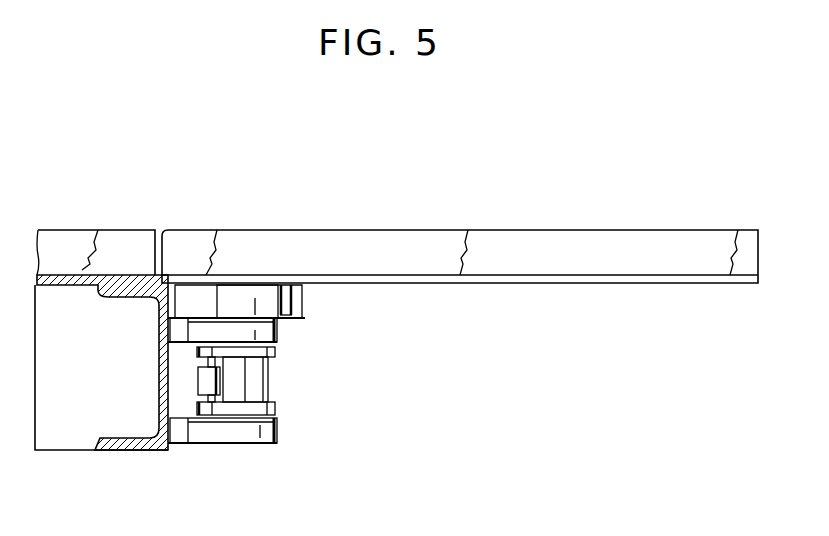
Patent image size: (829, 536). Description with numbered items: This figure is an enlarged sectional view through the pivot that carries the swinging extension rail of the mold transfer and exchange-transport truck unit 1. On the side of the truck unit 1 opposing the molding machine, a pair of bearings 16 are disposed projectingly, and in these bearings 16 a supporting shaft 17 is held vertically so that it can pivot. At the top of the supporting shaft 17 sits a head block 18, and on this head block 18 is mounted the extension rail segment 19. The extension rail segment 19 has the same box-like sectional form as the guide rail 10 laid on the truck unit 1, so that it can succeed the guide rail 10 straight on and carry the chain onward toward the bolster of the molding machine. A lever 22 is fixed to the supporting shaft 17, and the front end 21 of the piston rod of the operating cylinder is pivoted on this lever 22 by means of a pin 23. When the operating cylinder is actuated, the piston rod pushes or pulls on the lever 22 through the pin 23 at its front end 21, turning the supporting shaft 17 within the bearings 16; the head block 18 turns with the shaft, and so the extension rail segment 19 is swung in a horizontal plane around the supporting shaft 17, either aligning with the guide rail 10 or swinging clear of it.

The mold transfer and exchange-transport truck unit 1 is at (120, 450).
The guide rail 10 is at (100, 230).
The extension rail segment 19 is at (423, 230).
The head block 18 is at (295, 305).
The bearings 16 is at (275, 330).
The lever 22 is at (277, 352).
The supporting shaft 17 is at (265, 382).
The front end of the piston rod 21 is at (200, 385).
The pin 23 is at (198, 368).